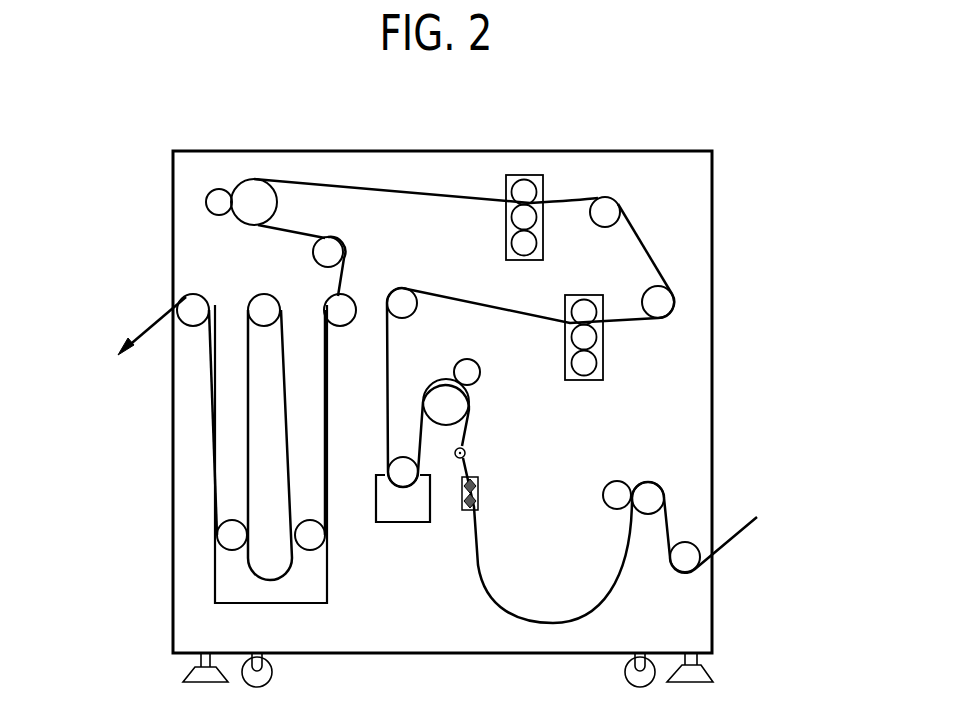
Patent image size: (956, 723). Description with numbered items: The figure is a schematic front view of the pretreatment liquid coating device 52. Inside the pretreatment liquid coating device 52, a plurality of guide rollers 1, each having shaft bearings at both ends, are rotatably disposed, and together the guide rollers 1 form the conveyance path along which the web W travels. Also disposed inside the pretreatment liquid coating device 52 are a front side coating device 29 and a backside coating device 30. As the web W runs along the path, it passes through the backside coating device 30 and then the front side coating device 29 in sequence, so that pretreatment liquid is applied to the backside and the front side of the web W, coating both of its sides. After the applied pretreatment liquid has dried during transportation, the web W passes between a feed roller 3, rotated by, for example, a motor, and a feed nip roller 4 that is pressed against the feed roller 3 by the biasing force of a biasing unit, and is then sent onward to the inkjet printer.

The guide roller 1 is at (327, 300).
The feed roller 3 is at (252, 192).
The feed nip roller 4 is at (218, 197).
The front side coating device 29 is at (545, 190).
The backside coating device 30 is at (603, 350).
The pretreatment liquid coating device 52 is at (668, 151).
The web W is at (393, 195).